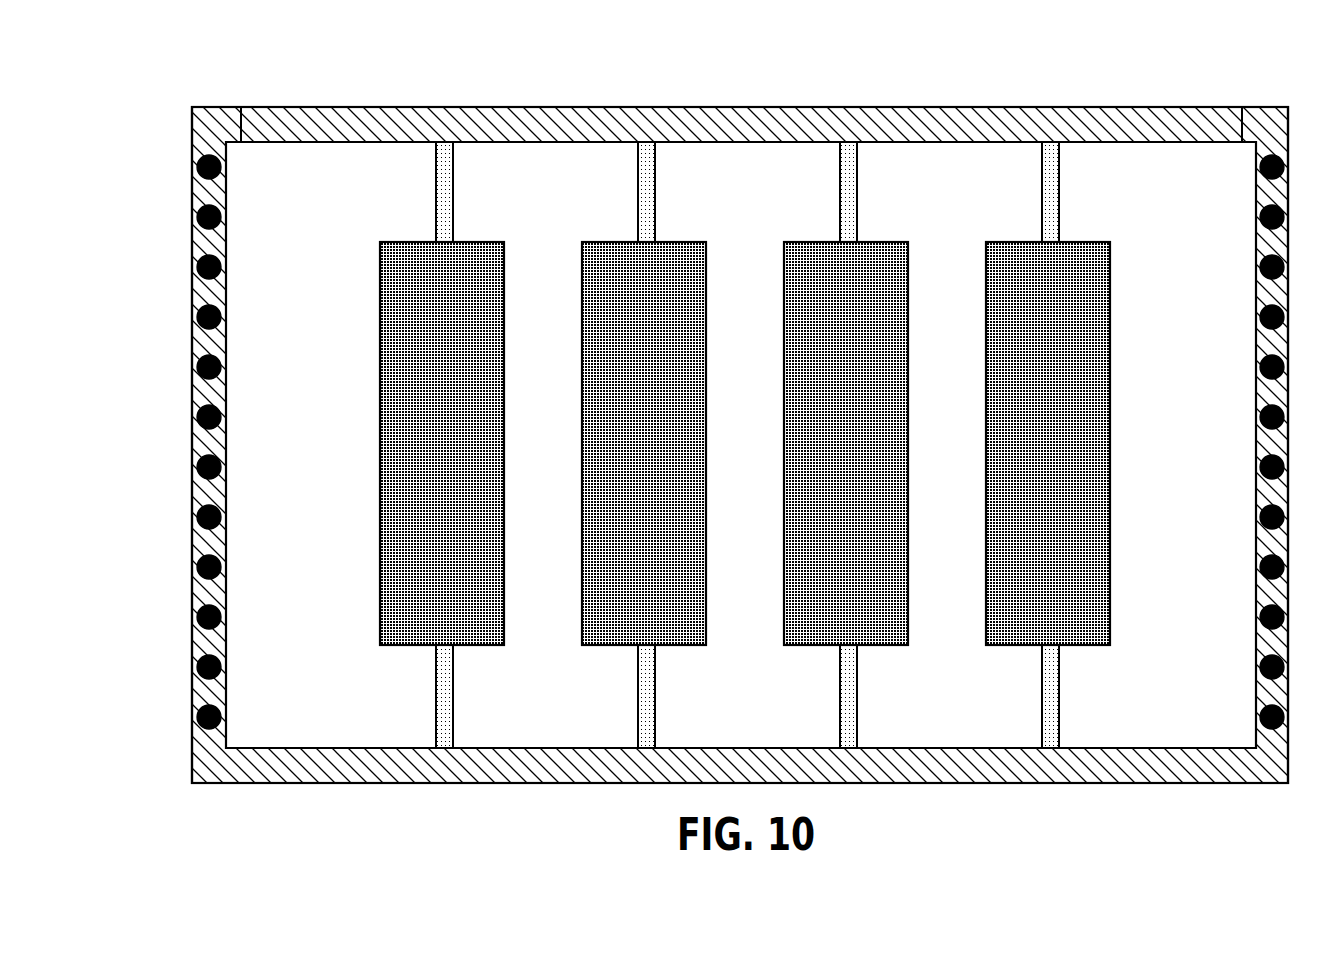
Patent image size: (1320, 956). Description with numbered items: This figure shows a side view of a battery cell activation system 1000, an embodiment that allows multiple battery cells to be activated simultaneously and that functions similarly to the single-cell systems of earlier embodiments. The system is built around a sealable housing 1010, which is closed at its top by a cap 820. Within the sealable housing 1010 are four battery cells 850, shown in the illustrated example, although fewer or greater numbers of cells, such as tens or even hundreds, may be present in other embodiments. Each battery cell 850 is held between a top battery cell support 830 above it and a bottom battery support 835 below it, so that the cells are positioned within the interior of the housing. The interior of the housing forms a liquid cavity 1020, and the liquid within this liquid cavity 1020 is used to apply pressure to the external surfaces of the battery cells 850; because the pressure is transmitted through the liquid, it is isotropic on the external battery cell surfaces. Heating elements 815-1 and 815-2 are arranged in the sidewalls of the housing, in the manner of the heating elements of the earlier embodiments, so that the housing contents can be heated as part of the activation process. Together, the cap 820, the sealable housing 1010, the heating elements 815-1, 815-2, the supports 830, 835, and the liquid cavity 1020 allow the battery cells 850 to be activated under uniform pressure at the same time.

The battery cell activation system 1000 is at (190, 100).
The cap 820 is at (358, 120).
The sealable housing 1010 is at (1248, 108).
The liquid cavity 1020 is at (325, 242).
The heating element 815-1 is at (193, 172).
The heating element 815-2 is at (193, 222).
The top battery cell support 830 is at (436, 185).
The bottom battery support 835 is at (436, 712).
The battery cell 850 is at (380, 612).